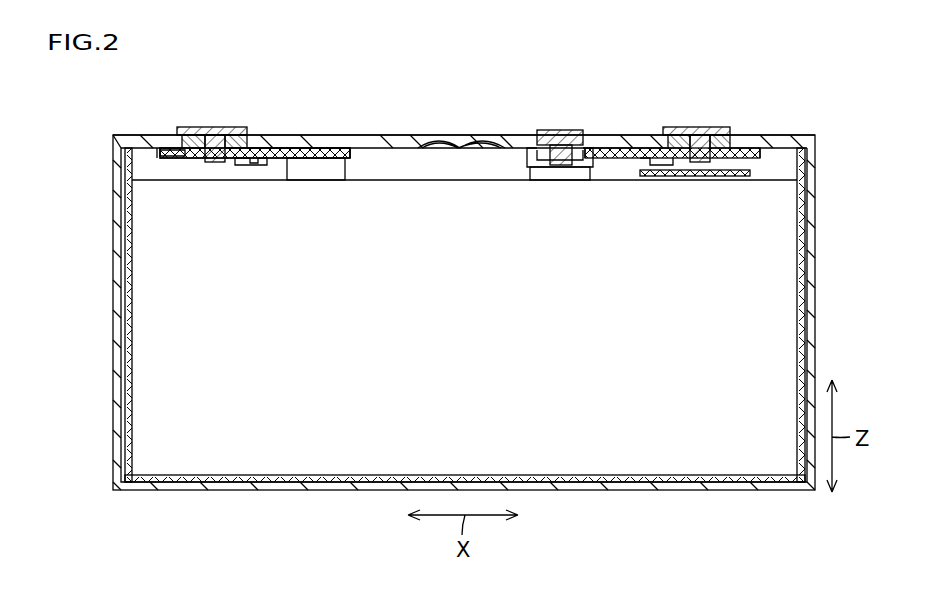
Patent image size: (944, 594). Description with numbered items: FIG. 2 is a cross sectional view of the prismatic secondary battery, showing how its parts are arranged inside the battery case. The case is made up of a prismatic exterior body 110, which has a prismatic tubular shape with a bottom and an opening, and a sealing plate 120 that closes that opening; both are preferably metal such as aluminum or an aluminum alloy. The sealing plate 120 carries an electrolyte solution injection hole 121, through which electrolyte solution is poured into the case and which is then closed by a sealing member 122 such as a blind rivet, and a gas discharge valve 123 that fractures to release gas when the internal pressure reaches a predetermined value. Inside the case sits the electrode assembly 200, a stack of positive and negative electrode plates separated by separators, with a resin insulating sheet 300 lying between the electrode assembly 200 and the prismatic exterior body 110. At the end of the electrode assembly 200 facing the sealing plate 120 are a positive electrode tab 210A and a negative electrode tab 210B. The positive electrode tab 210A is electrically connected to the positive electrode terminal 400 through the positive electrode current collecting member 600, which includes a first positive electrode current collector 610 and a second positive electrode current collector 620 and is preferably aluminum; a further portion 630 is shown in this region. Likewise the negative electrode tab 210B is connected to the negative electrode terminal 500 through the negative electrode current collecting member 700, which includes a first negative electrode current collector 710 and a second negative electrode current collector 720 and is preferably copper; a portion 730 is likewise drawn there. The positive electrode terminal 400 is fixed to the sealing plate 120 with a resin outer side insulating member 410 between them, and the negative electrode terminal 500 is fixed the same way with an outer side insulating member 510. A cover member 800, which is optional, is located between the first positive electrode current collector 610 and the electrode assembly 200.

The prismatic exterior body 110 is at (815, 292).
The sealing plate 120 is at (400, 140).
The electrolyte solution injection hole 121 is at (557, 130).
The sealing member 122 is at (568, 128).
The gas discharge valve 123 is at (452, 141).
The electrode assembly 200 is at (765, 345).
The positive electrode tab 210A is at (550, 175).
The negative electrode tab 210B is at (355, 141).
The insulating sheet 300 is at (118, 352).
The positive electrode terminal 400 is at (702, 128).
The outer side insulating member 410 is at (735, 130).
The negative electrode terminal 500 is at (206, 130).
The outer side insulating member 510 is at (178, 132).
The positive electrode current collecting member 600 is at (634, 186).
The first positive electrode current collector 610 is at (757, 153).
The second positive electrode current collector 620 is at (598, 150).
The collector step 630 is at (645, 160).
The negative electrode current collecting member 700 is at (252, 186).
The first negative electrode current collector 710 is at (190, 153).
The second negative electrode current collector 720 is at (273, 136).
The collector connection 730 is at (296, 136).
The cover member 800 is at (753, 174).